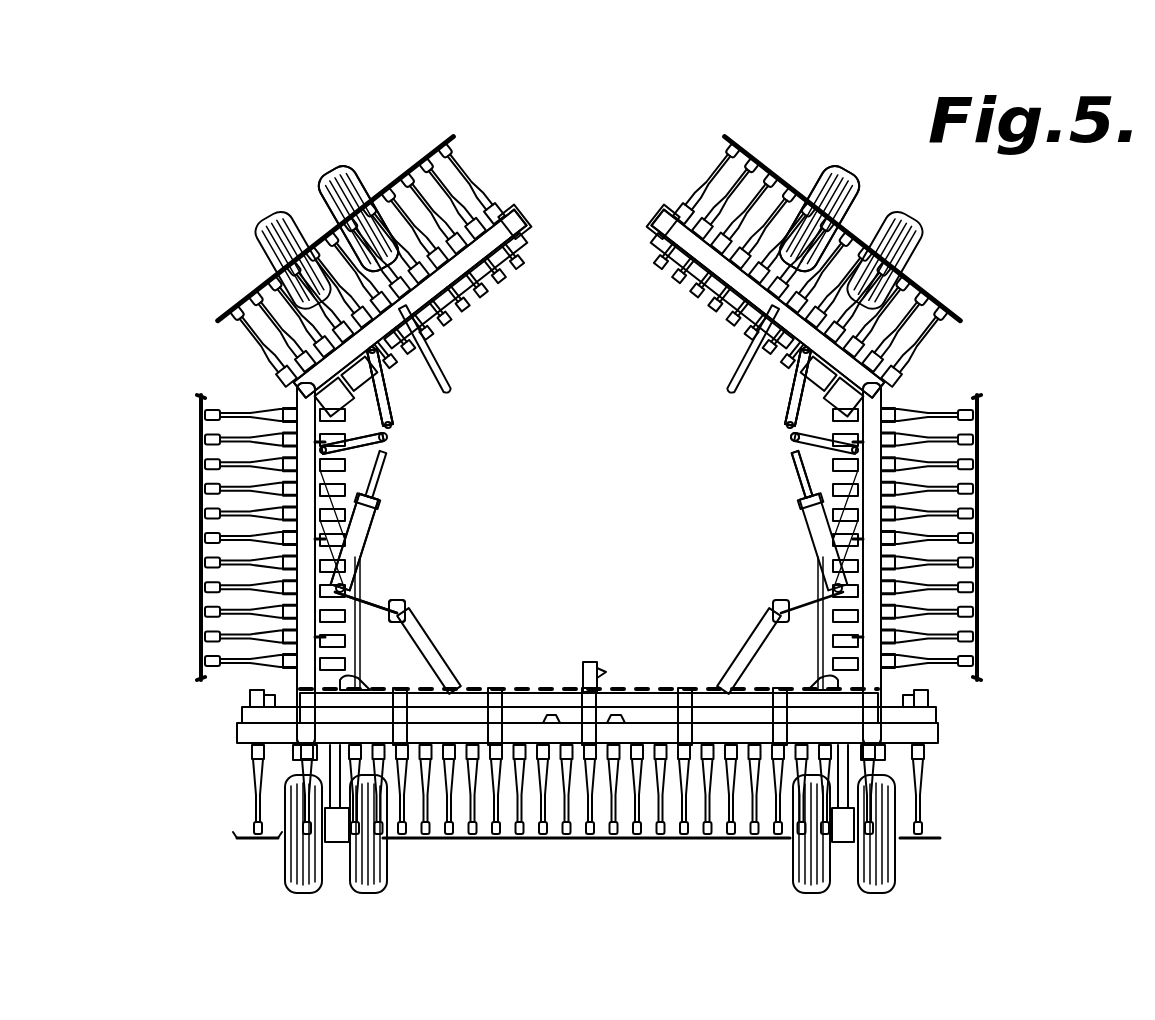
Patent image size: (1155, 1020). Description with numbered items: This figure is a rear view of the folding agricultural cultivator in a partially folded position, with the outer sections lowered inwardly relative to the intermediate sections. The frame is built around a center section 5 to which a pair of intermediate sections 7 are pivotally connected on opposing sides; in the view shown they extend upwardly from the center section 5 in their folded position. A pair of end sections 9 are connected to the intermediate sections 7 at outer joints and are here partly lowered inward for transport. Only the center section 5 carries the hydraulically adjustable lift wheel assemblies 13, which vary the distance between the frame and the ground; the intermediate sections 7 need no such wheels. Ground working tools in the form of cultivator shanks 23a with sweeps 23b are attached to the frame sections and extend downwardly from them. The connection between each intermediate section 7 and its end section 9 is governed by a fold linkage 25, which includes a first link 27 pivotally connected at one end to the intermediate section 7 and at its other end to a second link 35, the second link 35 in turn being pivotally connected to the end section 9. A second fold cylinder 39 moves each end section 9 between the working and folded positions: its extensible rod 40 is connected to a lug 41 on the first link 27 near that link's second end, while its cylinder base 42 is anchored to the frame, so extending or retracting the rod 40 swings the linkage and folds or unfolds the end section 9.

The center section 5 is at (516, 722).
The intermediate sections 7 is at (276, 420).
The end sections 9 is at (522, 216).
The lift wheel assemblies 13 is at (330, 162).
The cultivator shanks 23a is at (935, 782).
The sweeps 23b is at (935, 833).
The fold linkages 25 is at (402, 403).
The first link 27 is at (803, 453).
The second link 35 is at (790, 396).
The second fold cylinders 39 is at (370, 532).
The extensible rod 40 is at (380, 470).
The lug 41 is at (388, 426).
The cylinder base 42 is at (336, 598).